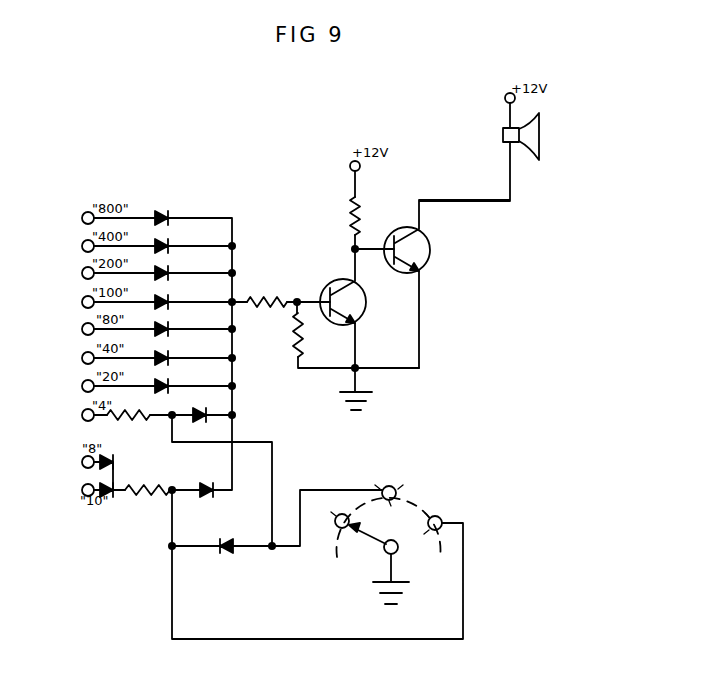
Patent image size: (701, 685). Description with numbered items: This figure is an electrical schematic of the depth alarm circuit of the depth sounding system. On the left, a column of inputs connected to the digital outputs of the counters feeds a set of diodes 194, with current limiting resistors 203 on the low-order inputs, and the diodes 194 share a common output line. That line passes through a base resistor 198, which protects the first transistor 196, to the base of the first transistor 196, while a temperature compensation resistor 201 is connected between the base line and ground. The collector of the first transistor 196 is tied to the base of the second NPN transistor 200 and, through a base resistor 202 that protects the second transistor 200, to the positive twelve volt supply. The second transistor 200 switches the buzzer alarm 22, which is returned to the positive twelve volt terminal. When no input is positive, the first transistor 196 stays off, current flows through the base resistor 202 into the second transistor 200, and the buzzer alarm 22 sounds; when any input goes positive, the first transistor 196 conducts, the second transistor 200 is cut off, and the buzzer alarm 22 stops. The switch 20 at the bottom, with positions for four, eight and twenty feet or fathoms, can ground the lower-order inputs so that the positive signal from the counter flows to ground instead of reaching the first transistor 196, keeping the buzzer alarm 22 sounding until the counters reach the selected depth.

The diodes 194 is at (133, 382).
The first transistor 196 is at (362, 318).
The base resistor 198 is at (267, 294).
The second NPN transistor 200 is at (430, 243).
The temperature compensation resistor 201 is at (292, 343).
The base resistor 202 is at (365, 217).
The current limiting resistors 203 is at (133, 421).
The switch 20 is at (425, 505).
The buzzer alarm 22 is at (545, 147).